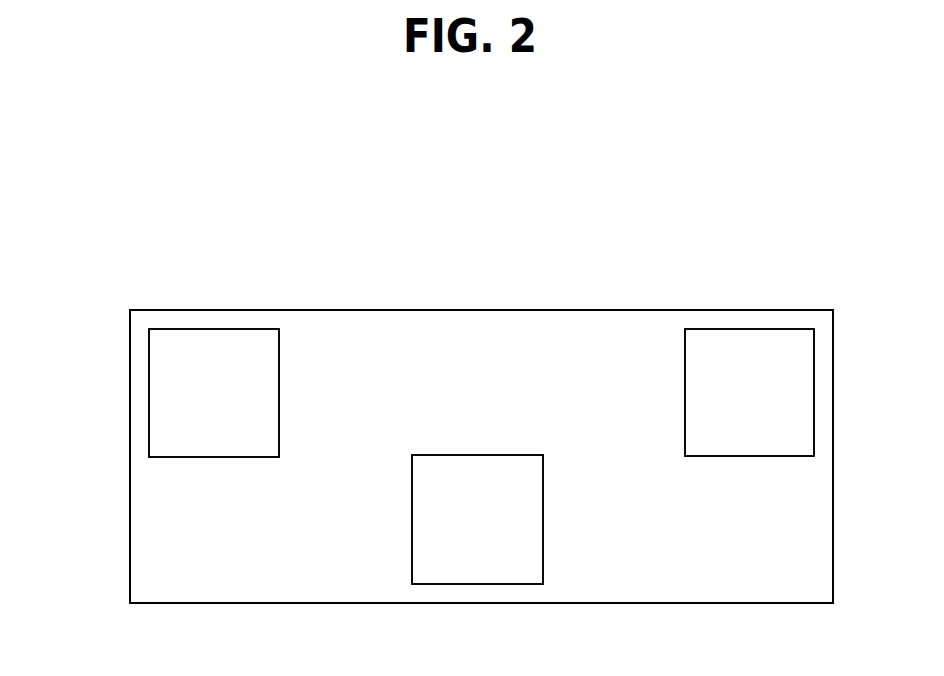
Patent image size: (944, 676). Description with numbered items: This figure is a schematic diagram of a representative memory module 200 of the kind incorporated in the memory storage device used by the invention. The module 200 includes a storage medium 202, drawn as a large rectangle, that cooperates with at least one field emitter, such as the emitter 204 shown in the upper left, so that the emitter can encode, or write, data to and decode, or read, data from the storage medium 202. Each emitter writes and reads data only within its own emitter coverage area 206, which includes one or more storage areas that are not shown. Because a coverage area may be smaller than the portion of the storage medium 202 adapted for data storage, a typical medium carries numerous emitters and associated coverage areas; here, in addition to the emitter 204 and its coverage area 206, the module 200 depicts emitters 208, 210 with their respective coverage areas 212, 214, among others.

The module 200 is at (140, 207).
The storage medium 202 is at (426, 310).
The emitter 204 is at (216, 375).
The emitter coverage area 206 is at (177, 457).
The emitter 208 is at (478, 503).
The emitter 210 is at (752, 373).
The coverage area 212 is at (439, 584).
The coverage area 214 is at (712, 456).